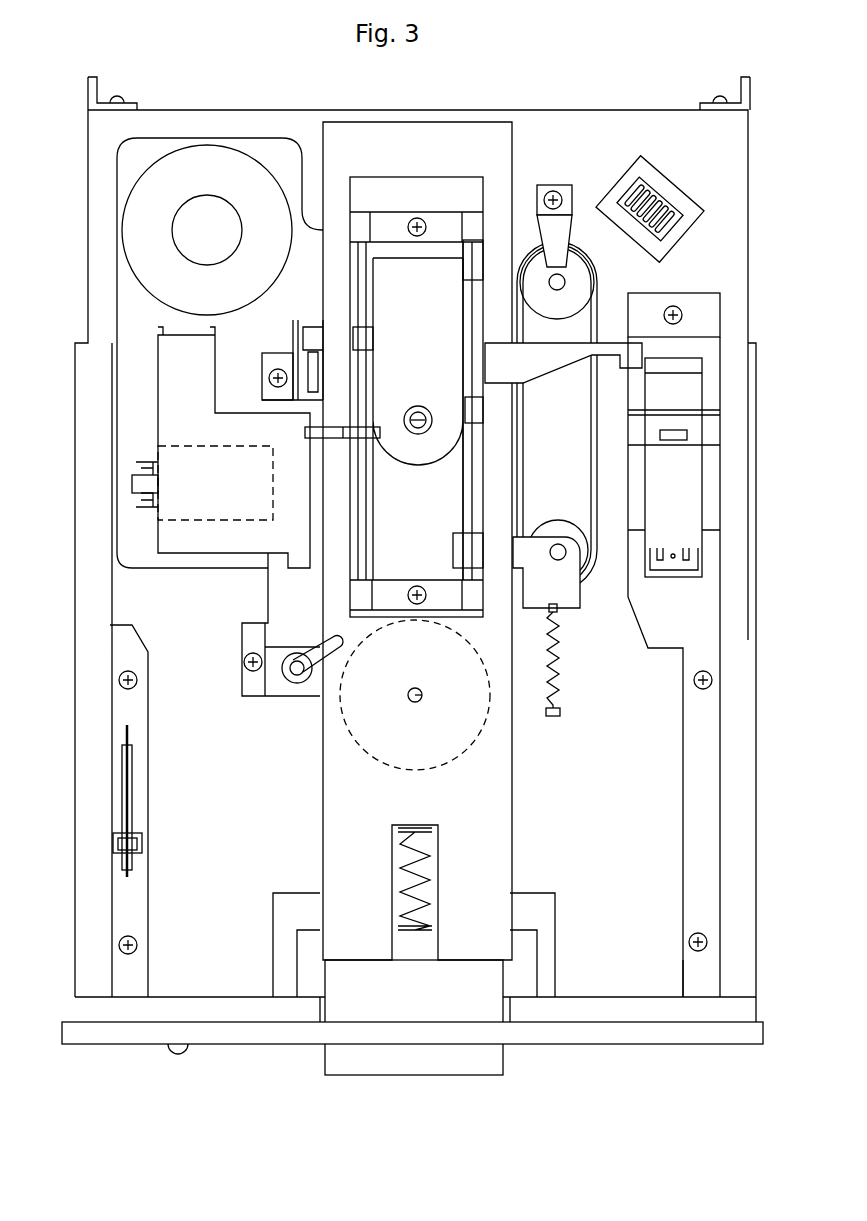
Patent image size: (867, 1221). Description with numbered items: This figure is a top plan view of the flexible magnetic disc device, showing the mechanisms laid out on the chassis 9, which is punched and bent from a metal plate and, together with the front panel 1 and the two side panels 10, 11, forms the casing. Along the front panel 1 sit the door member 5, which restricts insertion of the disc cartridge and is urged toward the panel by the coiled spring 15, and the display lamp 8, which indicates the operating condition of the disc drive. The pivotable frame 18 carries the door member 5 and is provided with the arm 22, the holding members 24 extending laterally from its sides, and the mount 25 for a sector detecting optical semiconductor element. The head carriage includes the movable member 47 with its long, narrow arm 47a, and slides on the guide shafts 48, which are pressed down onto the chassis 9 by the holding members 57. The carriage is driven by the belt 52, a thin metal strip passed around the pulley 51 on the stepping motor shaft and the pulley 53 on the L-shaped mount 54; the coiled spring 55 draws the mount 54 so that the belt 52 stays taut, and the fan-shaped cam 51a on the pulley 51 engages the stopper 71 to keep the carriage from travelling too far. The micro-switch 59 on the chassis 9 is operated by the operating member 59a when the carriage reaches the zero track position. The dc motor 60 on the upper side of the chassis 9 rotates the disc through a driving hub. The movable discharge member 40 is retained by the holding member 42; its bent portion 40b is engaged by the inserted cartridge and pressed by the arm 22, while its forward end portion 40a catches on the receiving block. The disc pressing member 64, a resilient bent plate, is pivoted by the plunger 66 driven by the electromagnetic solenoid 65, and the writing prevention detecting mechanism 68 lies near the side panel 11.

The front panel 1 is at (612, 1036).
The door member 5 is at (452, 1010).
The display lamp 8 is at (192, 1052).
The chassis 9 is at (652, 960).
The side panel 10 is at (738, 632).
The side panel 11 is at (95, 605).
The coiled spring 15 is at (425, 897).
The pivotable frame 18 is at (490, 796).
The arm 22 is at (598, 352).
The holding member 24 is at (285, 972).
The mount 25 is at (292, 689).
The movable discharge member 40 is at (657, 525).
The forward end portion 40a is at (654, 577).
The bent portion 40b is at (672, 448).
The holding member 42 is at (709, 390).
The movable member 47 is at (436, 450).
The arm 47a is at (326, 438).
The guide shaft 48 is at (471, 520).
The pulley 51 is at (582, 292).
The fan-shaped cam 51a is at (545, 306).
The belt 52 is at (590, 450).
The pulley 53 is at (563, 530).
The mount 54 is at (572, 598).
The coiled spring 55 is at (561, 682).
The holding member 57 is at (402, 212).
The micro-switch 59 is at (305, 357).
The operating member 59a is at (300, 396).
The dc motor 60 is at (255, 207).
The disc pressing member 64 is at (288, 530).
The electromagnetic solenoid 65 is at (185, 446).
The plunger 66 is at (143, 500).
The writing prevention detecting mechanism 68 is at (138, 843).
The stopper 71 is at (562, 246).